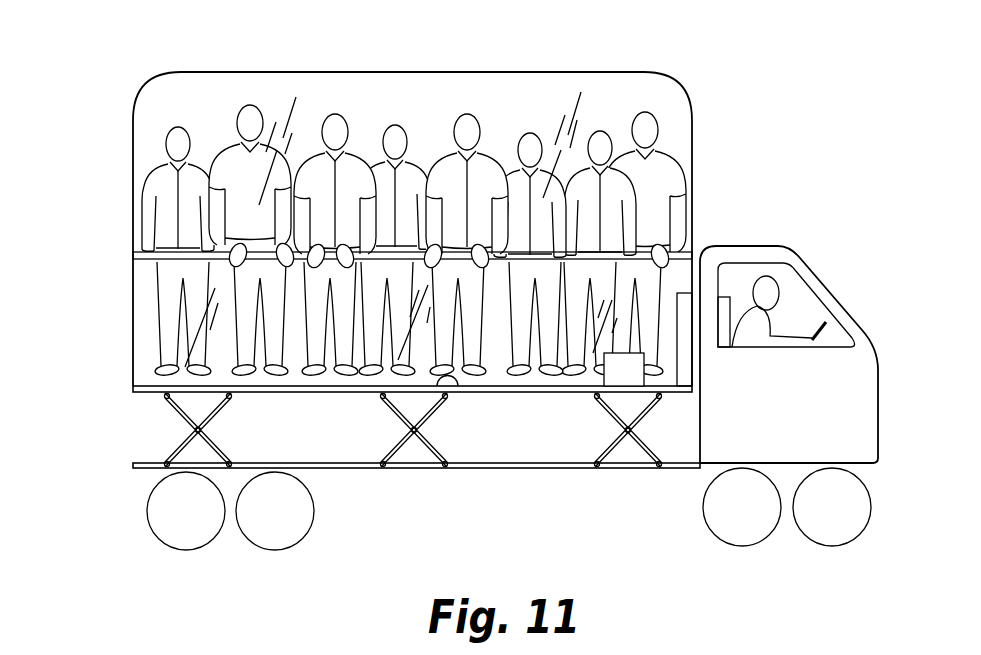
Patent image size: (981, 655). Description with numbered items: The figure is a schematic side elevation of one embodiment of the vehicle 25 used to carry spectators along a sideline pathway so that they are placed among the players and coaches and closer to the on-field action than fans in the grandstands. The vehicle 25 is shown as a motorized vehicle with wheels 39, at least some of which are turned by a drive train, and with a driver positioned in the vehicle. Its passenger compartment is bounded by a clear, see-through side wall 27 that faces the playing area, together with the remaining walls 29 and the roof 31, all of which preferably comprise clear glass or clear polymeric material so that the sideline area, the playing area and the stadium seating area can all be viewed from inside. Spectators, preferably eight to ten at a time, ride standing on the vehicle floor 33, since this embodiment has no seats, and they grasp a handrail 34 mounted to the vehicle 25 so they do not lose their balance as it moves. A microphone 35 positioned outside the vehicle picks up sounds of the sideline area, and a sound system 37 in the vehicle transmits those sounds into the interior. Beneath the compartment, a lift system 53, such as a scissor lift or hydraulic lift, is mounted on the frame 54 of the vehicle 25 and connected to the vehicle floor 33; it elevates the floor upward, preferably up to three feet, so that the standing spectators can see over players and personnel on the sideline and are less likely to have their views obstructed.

The vehicle 25 is at (518, 351).
The side wall 27 is at (177, 108).
The remaining walls 29 is at (523, 122).
The roof 31 is at (413, 72).
The vehicle floor 33 is at (456, 382).
The handrail 34 is at (133, 258).
The microphone 35 is at (629, 362).
The sound system 37 is at (683, 360).
The wheels 39 is at (188, 533).
The lift system 53 is at (125, 423).
The frame 54 is at (345, 465).